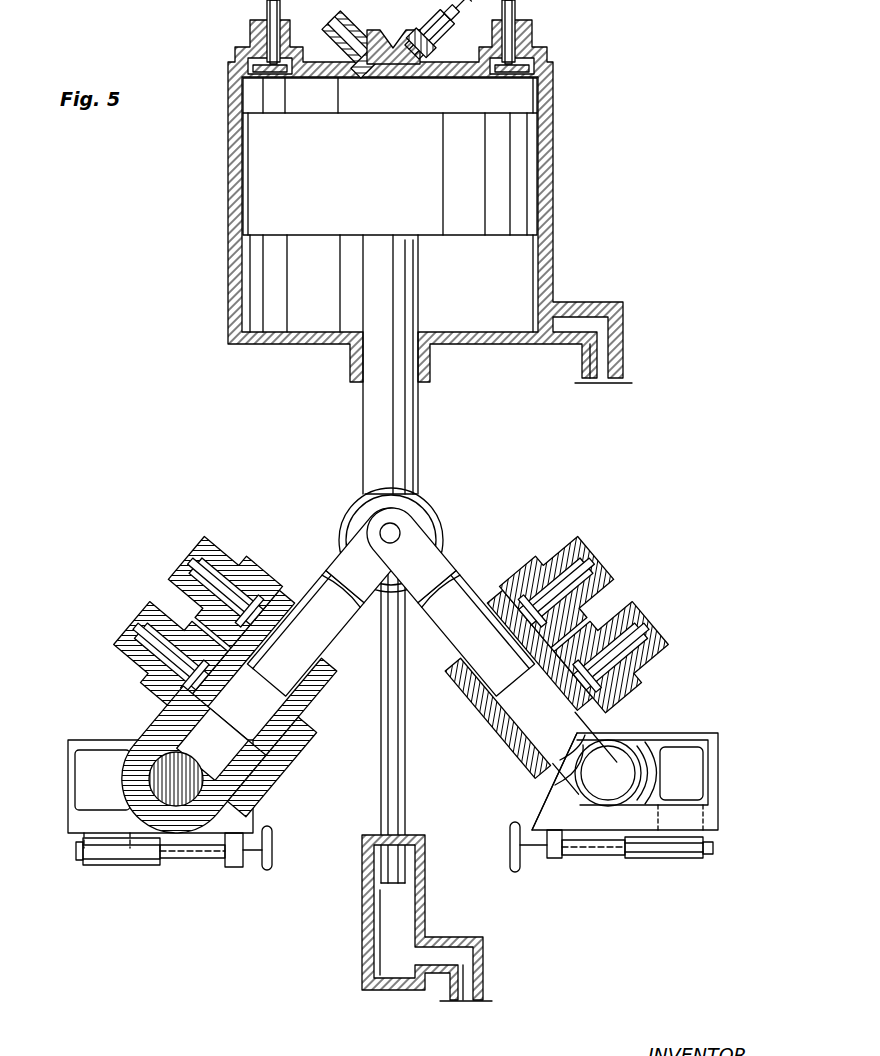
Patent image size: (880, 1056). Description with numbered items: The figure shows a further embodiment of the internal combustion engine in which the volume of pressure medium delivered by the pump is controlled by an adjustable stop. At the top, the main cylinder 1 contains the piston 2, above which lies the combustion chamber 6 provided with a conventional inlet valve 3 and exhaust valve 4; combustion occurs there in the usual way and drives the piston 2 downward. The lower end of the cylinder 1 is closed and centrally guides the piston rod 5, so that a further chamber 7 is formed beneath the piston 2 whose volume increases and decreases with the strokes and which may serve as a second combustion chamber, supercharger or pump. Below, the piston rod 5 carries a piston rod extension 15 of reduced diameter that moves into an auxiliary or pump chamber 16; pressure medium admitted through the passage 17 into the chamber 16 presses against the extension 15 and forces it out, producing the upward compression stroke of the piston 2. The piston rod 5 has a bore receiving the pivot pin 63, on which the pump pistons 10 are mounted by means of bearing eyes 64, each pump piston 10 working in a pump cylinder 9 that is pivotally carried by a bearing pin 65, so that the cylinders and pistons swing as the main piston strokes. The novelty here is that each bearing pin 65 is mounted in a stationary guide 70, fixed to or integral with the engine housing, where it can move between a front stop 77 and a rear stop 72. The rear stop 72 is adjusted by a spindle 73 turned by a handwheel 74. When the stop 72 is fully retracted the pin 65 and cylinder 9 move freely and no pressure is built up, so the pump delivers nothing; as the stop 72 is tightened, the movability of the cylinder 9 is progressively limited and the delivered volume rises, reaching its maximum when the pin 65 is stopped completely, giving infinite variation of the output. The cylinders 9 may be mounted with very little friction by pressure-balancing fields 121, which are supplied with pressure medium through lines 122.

The cylinder 1 is at (553, 137).
The piston 2 is at (452, 190).
The inlet valve 3 is at (520, 38).
The exhaust valve 4 is at (272, 22).
The piston rod 5 is at (363, 455).
The combustion chamber 6 is at (485, 100).
The further chamber 7 is at (478, 287).
The pump cylinder 9 is at (278, 597).
The pump piston 10 is at (316, 585).
The piston rod extension 15 is at (390, 812).
The auxiliary or pump chamber 16 is at (392, 904).
The passage 17 is at (462, 953).
The pivot pin 63 is at (388, 532).
The bearing eye 64 is at (356, 566).
The bearing pin 65 is at (190, 786).
The guide 70 is at (674, 740).
The rear stop 72 is at (92, 756).
The spindle 73 is at (183, 857).
The handwheel 74 is at (273, 848).
The front stop 77 is at (566, 798).
The pressure-balancing field 121 is at (236, 750).
The line 122 is at (217, 718).